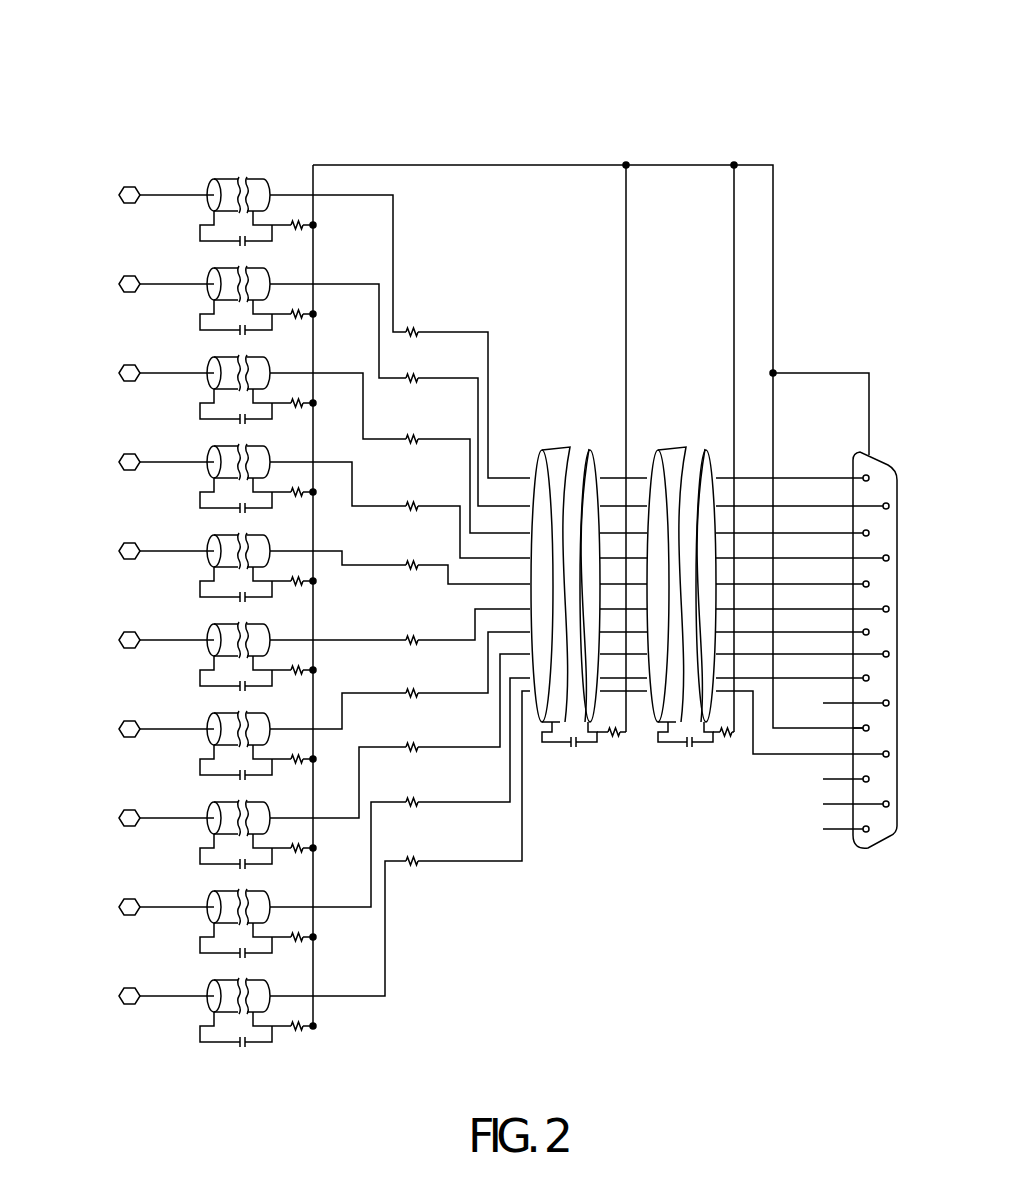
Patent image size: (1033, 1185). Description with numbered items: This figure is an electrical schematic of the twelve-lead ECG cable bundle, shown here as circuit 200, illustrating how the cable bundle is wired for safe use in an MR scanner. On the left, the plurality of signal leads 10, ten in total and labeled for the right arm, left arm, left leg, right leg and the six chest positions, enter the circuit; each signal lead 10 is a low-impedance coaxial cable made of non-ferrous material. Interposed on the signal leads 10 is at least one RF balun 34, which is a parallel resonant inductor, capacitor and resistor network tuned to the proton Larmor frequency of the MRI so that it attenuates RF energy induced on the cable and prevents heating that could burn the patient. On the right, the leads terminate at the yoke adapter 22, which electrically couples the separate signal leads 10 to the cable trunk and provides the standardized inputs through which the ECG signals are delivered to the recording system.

The isolation circuit 200 is at (96, 86).
The signal leads 10 is at (97, 150).
The RF balun 34 is at (263, 150).
The yoke adapter 22 is at (900, 643).